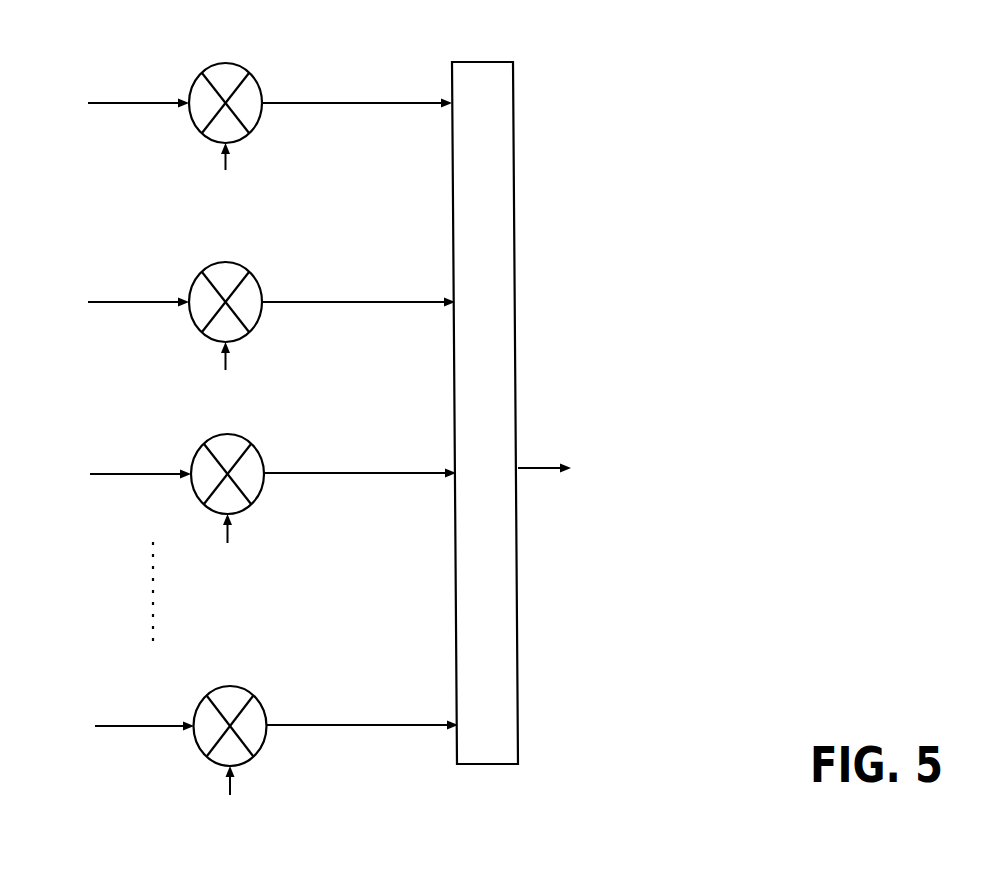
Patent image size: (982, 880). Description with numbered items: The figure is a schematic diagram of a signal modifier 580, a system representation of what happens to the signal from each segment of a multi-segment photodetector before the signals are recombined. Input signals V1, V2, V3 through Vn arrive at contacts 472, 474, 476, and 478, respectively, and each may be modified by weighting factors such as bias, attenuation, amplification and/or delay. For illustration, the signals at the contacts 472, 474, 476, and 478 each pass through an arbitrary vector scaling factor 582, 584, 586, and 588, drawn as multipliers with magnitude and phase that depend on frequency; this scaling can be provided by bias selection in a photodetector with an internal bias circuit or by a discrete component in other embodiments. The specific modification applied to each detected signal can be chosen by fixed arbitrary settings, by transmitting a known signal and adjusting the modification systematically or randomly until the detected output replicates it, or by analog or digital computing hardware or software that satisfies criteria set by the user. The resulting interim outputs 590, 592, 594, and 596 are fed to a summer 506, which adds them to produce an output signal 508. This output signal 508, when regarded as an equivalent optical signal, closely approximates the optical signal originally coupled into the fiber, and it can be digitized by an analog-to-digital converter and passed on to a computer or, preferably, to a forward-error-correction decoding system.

The signal modifier 580 is at (640, 84).
The summer 506 is at (513, 152).
The output signal 508 is at (545, 468).
The contact 472 is at (136, 103).
The contact 474 is at (136, 302).
The contact 476 is at (133, 474).
The contact 478 is at (107, 726).
The vector scaling factor 582 is at (222, 148).
The vector scaling factor 584 is at (225, 363).
The vector scaling factor 586 is at (227, 535).
The vector scaling factor 588 is at (230, 777).
The interim output 590 is at (345, 103).
The interim output 592 is at (317, 302).
The interim output 594 is at (327, 473).
The interim output 596 is at (320, 725).